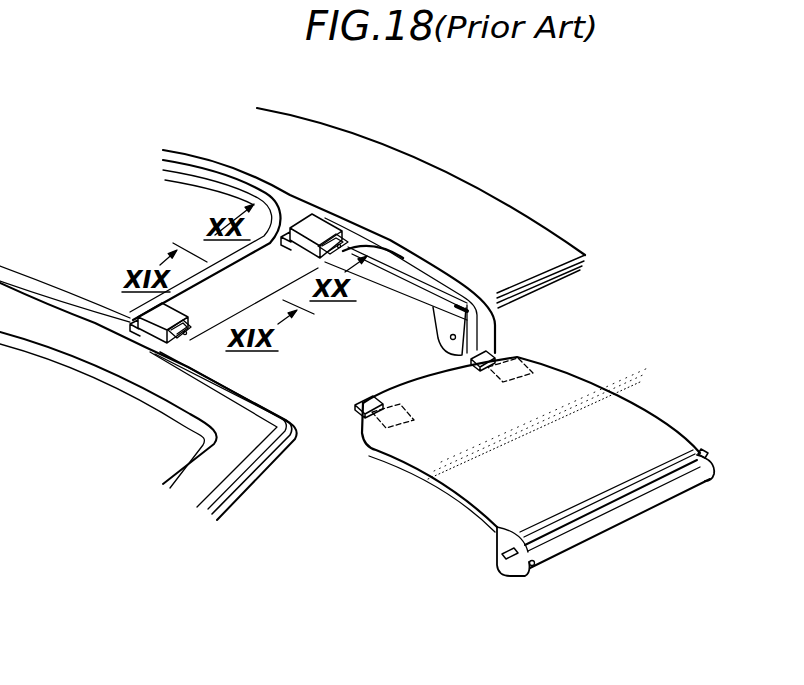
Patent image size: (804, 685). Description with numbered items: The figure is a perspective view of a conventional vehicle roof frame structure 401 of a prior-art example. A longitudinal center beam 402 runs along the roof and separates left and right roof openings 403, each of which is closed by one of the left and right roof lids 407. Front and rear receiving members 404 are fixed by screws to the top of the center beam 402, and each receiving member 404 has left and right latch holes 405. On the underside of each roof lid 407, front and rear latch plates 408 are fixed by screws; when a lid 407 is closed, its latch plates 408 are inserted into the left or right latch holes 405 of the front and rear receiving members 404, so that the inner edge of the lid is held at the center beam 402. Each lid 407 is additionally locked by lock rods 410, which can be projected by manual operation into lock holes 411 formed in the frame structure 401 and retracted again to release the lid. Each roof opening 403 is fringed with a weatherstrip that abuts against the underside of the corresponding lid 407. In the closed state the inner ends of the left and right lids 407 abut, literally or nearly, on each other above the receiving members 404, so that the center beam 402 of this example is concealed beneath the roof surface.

The vehicle roof frame structure 401 is at (318, 133).
The longitudinal center beam 402 is at (223, 278).
The roof opening 403 is at (96, 242).
The receiving member 404 is at (314, 222).
The latch hole 405 is at (338, 232).
The roof lid 407 is at (603, 386).
The latch plate 408 is at (487, 356).
The lock rod 410 is at (703, 449).
The lock hole 411 is at (447, 342).